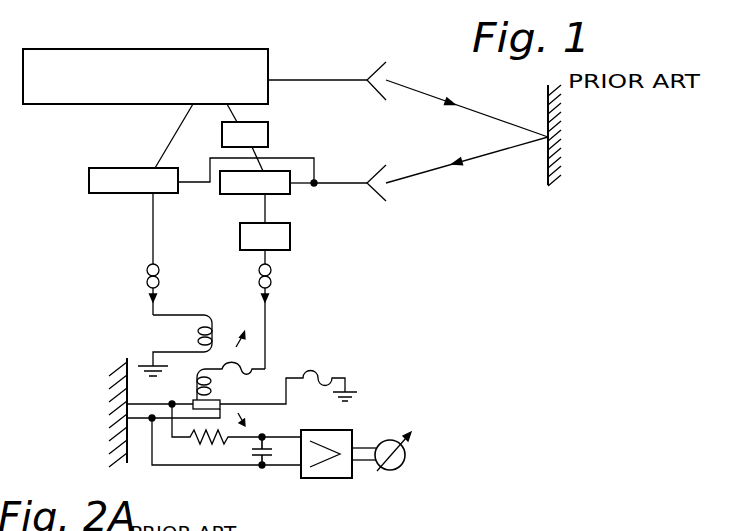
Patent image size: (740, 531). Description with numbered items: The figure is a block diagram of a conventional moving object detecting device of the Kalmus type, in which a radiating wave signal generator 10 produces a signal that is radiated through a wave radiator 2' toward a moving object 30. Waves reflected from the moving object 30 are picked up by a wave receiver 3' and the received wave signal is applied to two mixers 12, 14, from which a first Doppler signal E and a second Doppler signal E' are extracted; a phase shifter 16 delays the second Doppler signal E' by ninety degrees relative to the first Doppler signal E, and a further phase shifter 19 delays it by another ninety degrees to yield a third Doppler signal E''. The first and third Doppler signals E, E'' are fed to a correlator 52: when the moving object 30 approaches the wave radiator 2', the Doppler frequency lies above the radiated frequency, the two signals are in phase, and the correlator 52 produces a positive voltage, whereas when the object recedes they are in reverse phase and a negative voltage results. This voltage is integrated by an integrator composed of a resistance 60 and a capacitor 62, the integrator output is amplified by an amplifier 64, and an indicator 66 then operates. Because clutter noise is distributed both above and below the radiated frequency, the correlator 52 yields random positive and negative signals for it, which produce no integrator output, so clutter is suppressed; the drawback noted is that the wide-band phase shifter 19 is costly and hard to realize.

The radiating wave signal generator 10 is at (268, 52).
The wave radiator 2' is at (365, 66).
The wave receiver 3' is at (386, 201).
The moving object 30 is at (546, 102).
The phase shifter 16 is at (268, 134).
The mixer 14 is at (118, 193).
The mixer 12 is at (232, 194).
The phase shifter 19 is at (290, 236).
The first Doppler signal E is at (163, 254).
The second Doppler signal E' is at (283, 207).
The third Doppler signal E'' is at (281, 309).
The correlator 52 is at (127, 450).
The resistance 60 is at (216, 442).
The capacitor 62 is at (270, 466).
The amplifier 64 is at (341, 478).
The indicator 66 is at (403, 470).